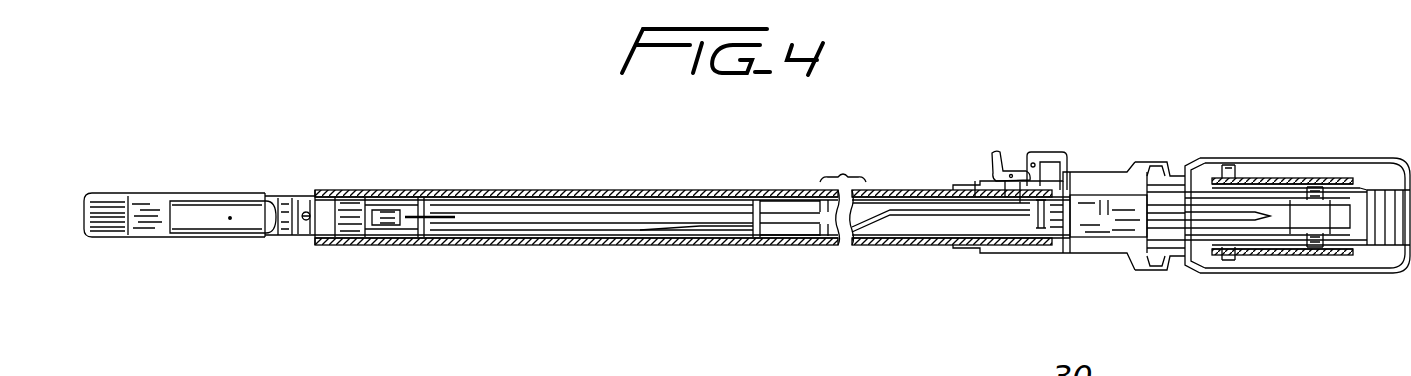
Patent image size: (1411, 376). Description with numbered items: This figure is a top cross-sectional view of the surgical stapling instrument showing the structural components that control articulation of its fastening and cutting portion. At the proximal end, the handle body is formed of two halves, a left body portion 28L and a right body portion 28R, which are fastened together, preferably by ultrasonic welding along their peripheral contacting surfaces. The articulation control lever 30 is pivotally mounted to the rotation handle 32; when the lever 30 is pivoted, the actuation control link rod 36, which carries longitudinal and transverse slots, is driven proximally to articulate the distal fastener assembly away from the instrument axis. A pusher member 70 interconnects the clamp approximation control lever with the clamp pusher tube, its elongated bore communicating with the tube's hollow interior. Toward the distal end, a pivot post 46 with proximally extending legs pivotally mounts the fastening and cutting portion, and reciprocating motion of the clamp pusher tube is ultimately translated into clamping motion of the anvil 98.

The anvil 98 is at (229, 212).
The pivot post 46 is at (350, 197).
The actuation control link rod 36 is at (598, 207).
The articulation control lever 30 is at (1000, 182).
The rotation handle 32 is at (1140, 163).
The pusher member 70 is at (1094, 224).
The right body portion 28R is at (1343, 162).
The left body portion 28L is at (1341, 263).